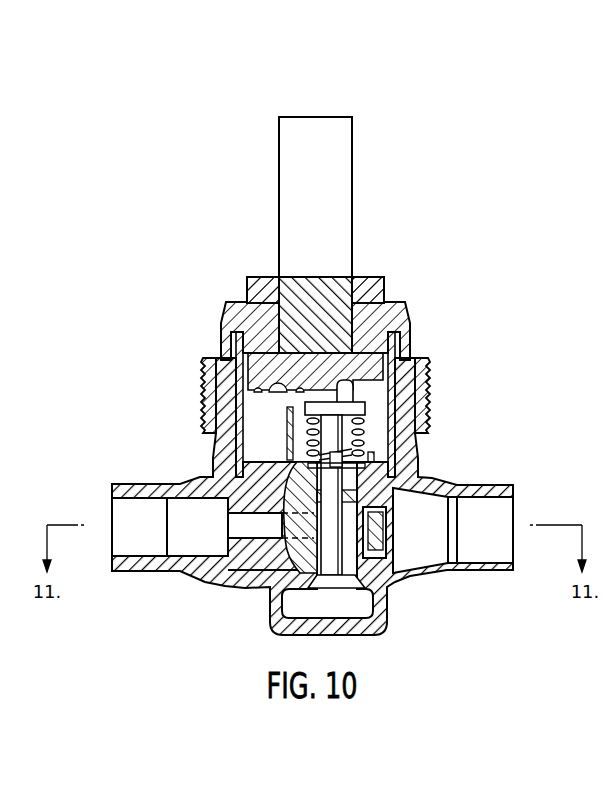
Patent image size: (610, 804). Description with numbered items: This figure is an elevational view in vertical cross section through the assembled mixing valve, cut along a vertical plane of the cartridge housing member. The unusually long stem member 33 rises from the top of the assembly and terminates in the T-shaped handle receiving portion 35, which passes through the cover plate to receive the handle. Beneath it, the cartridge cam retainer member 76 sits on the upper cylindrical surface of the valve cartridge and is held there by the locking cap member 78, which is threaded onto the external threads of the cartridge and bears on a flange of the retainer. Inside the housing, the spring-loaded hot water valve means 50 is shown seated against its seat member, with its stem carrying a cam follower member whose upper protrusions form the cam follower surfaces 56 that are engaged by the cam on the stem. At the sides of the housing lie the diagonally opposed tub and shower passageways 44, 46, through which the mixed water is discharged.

The stem member 33 is at (355, 252).
The T-shaped handle receiving portion 35 is at (290, 217).
The cartridge cam retainer member 76 is at (266, 267).
The locking cap member 78 is at (247, 285).
The cam follower surfaces 56 is at (346, 391).
The tub passageway 44 is at (140, 562).
The shower passageway 46 is at (472, 565).
The hot water valve means 50 is at (334, 582).